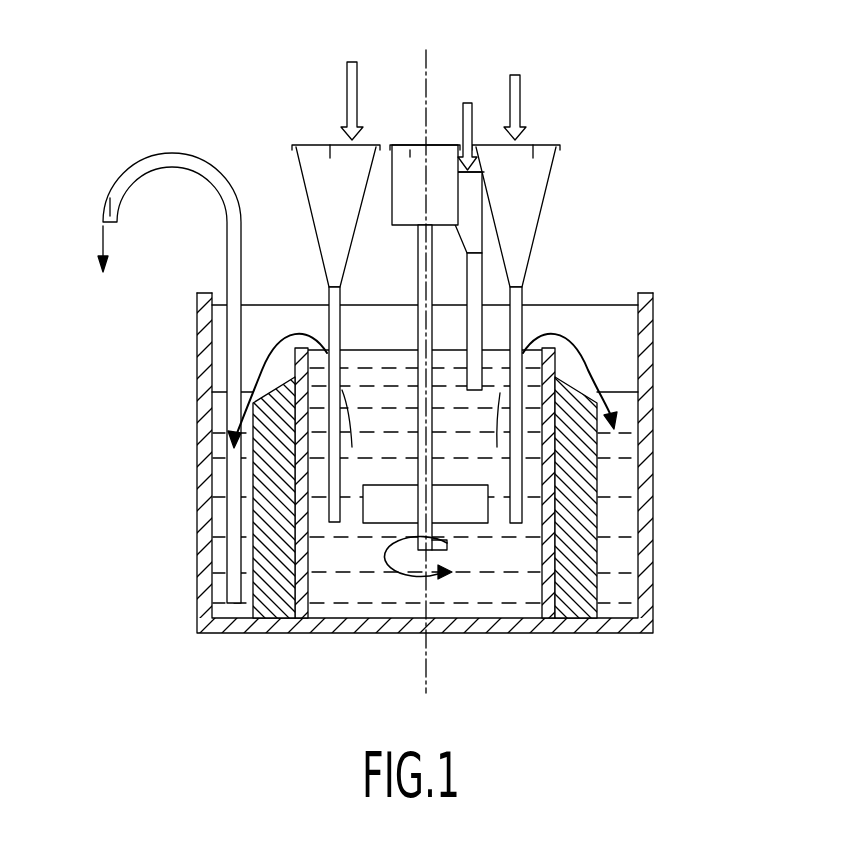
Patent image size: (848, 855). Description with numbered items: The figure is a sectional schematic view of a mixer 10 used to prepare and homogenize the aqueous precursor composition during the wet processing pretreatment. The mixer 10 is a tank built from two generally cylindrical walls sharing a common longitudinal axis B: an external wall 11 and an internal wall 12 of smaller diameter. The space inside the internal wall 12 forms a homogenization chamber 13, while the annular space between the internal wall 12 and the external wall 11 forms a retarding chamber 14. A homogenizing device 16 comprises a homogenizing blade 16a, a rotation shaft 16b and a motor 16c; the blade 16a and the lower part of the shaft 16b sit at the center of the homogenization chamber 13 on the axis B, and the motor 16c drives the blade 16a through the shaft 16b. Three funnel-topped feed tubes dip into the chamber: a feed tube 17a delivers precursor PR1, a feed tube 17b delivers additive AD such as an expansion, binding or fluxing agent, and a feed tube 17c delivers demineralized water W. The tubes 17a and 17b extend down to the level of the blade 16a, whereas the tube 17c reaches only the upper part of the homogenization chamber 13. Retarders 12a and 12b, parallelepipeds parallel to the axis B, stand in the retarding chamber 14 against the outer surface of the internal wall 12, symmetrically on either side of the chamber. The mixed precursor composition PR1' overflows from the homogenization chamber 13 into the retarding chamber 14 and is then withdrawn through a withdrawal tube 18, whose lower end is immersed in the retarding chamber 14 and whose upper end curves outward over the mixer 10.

The mixer 10 is at (485, 463).
The external wall 11 is at (647, 421).
The internal wall 12 is at (548, 568).
The retarder 12a is at (583, 552).
The retarder 12b is at (270, 528).
The homogenization chamber 13 is at (336, 582).
The retarding chamber 14 is at (624, 396).
The homogenizing device 16 is at (433, 362).
The homogenizing blade 16a is at (463, 512).
The rotation shaft 16b is at (418, 470).
The motor 16c is at (410, 152).
The feed tube 17a is at (330, 148).
The feed tube 17b is at (533, 150).
The feed tube 17c is at (475, 220).
The withdrawal tube 18 is at (165, 157).
The precursor PR1 is at (325, 78).
The precursor composition PR1' is at (351, 337).
The additive AD is at (523, 84).
The demineralized water W is at (472, 117).
The longitudinal axis B is at (421, 354).